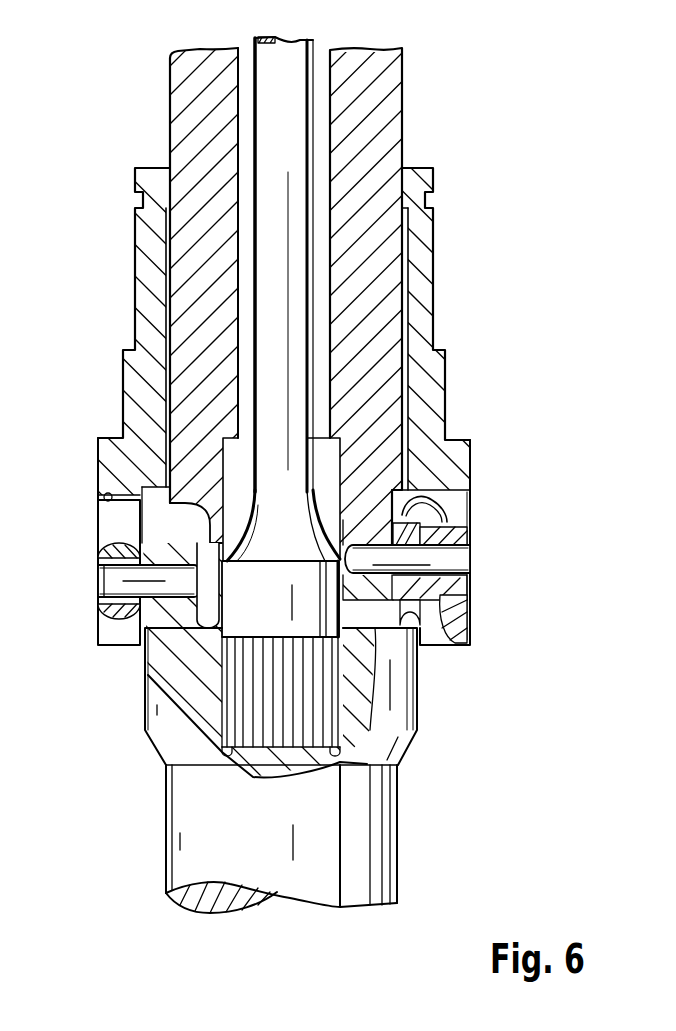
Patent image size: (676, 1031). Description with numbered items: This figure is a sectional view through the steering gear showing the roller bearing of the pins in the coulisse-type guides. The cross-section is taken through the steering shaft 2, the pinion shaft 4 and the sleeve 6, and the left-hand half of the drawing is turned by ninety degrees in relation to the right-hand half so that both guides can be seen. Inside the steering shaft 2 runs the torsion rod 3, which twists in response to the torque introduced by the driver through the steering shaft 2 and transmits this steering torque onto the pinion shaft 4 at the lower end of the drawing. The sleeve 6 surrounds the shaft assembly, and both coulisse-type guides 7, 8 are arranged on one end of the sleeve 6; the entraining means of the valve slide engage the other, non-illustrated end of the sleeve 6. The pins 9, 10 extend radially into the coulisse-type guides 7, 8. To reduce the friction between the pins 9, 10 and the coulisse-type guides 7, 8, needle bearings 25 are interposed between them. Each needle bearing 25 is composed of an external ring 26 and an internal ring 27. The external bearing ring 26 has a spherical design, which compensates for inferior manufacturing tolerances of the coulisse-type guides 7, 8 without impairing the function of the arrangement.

The steering shaft 2 is at (185, 125).
The torsion rod 3 is at (297, 103).
The pinion shaft 4 is at (180, 818).
The sleeve 6 is at (418, 258).
The coulisse-type guide 7 is at (106, 500).
The coulisse-type guide 8 is at (472, 492).
The pin 9 is at (98, 585).
The pin 10 is at (453, 562).
The needle bearing 25 is at (478, 512).
The external ring 26 is at (112, 540).
The internal ring 27 is at (98, 558).